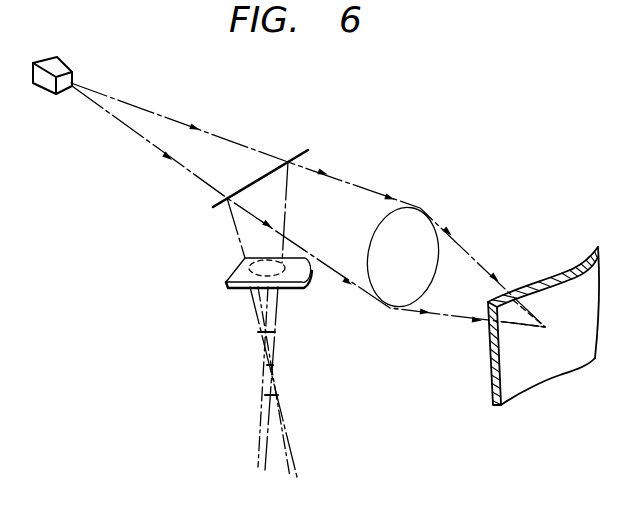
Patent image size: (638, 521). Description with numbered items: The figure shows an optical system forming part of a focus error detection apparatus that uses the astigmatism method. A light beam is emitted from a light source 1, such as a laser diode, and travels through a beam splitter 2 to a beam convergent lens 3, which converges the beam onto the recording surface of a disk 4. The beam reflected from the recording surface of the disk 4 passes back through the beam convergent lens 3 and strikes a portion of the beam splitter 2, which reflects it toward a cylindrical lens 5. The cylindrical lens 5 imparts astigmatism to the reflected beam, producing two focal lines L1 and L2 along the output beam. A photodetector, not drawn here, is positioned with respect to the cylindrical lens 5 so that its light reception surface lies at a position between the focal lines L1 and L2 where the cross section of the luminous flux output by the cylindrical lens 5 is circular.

The light source 1 is at (57, 63).
The beam splitter 2 is at (302, 153).
The beam convergent lens 3 is at (382, 228).
The disk 4 is at (560, 373).
The cylindrical lens 5 is at (235, 265).
The focal line L1 is at (258, 333).
The focal line L2 is at (273, 396).